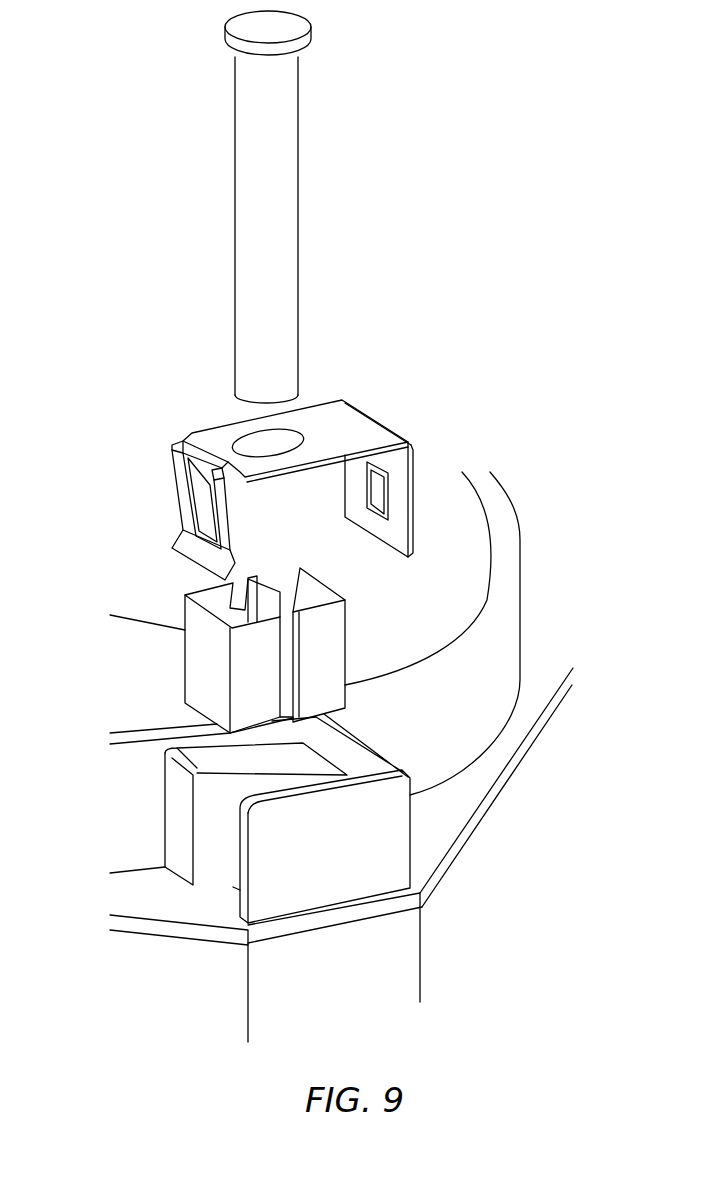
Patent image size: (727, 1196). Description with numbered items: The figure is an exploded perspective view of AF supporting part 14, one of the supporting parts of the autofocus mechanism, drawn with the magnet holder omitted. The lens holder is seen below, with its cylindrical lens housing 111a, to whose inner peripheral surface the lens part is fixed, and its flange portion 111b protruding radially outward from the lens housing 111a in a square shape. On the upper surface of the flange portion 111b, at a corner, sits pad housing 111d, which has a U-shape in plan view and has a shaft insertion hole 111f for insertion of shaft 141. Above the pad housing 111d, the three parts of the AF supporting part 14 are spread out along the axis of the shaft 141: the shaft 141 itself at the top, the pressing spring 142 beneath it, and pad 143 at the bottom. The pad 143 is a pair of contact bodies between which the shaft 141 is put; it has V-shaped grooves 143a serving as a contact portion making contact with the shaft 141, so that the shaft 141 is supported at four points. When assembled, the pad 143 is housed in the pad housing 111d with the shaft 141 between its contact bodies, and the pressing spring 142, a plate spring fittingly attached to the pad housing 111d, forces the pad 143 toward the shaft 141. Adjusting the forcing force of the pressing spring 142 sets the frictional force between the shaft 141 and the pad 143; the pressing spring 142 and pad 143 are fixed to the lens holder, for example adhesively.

The AF supporting part 14 is at (150, 489).
The shaft 141 is at (287, 137).
The pressing spring 142 is at (364, 420).
The pad 143 is at (190, 658).
The V-shaped groove 143a is at (237, 600).
The lens housing 111a is at (520, 582).
The flange portion 111b is at (473, 768).
The pad housing 111d is at (377, 857).
The shaft insertion hole 111f is at (233, 887).